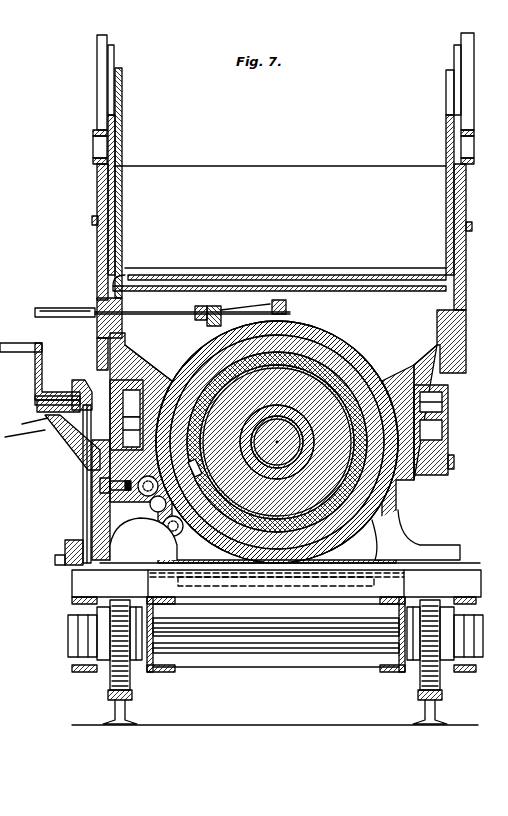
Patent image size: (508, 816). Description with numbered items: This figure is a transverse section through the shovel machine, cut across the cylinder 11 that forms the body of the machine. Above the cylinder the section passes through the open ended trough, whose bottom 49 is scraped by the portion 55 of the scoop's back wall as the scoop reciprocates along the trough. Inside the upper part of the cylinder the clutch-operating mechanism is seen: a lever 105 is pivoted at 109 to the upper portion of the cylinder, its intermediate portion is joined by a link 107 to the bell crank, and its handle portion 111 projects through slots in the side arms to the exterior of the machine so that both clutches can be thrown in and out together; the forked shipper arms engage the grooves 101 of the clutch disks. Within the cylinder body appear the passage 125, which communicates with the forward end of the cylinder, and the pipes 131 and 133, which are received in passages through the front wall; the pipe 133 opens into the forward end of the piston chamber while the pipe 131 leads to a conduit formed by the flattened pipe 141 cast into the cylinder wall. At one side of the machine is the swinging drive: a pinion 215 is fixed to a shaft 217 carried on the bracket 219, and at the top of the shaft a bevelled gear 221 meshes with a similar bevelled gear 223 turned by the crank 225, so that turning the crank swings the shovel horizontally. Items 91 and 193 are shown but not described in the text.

The cylinder 11 is at (358, 364).
The bottom 49 is at (362, 290).
The portion 55 is at (272, 276).
The bracket 91 is at (22, 436).
The groove 101 is at (24, 422).
The lever 105 is at (182, 314).
The link 107 is at (232, 310).
The pivot 109 is at (287, 306).
The handle portion 111 is at (72, 308).
The passage 125 is at (166, 505).
The pipe 131 is at (158, 487).
The pipe 133 is at (183, 526).
The flattened pipe 141 is at (199, 462).
The pin 193 is at (40, 404).
The pinion 215 is at (66, 558).
The shaft 217 is at (100, 473).
The bracket 219 is at (100, 508).
The bevelled gear 221 is at (95, 408).
The bevelled gear 223 is at (75, 392).
The crank 225 is at (30, 338).